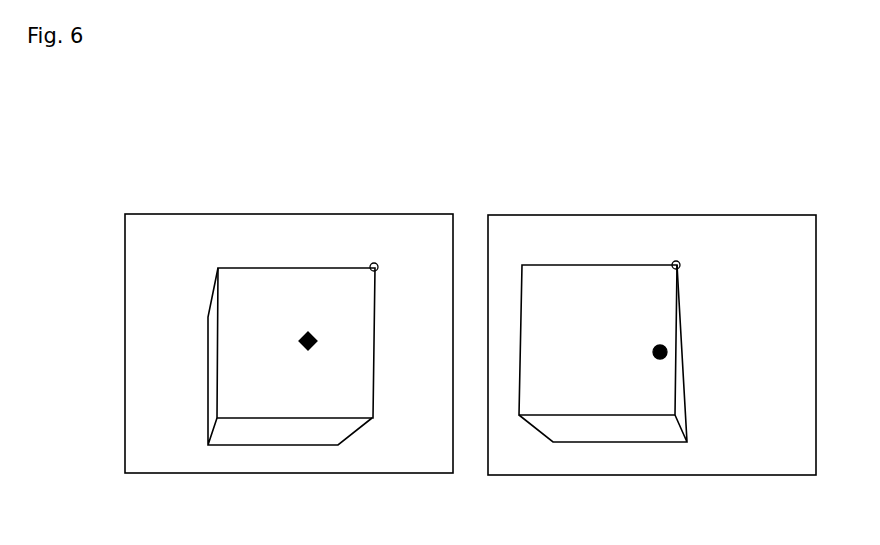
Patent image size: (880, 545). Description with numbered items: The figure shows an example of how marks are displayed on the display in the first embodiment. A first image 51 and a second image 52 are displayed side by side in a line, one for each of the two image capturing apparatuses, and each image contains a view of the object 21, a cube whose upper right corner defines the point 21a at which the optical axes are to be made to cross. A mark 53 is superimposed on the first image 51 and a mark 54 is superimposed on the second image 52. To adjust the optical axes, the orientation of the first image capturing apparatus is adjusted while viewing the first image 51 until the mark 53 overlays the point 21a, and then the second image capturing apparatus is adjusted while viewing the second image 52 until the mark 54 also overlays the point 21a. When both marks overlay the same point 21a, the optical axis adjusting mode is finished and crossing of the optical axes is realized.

The second image 52 is at (220, 215).
The first image 51 is at (697, 217).
The object 21 is at (237, 318).
The point 21a is at (675, 261).
The mark 54 is at (315, 337).
The mark 53 is at (667, 352).